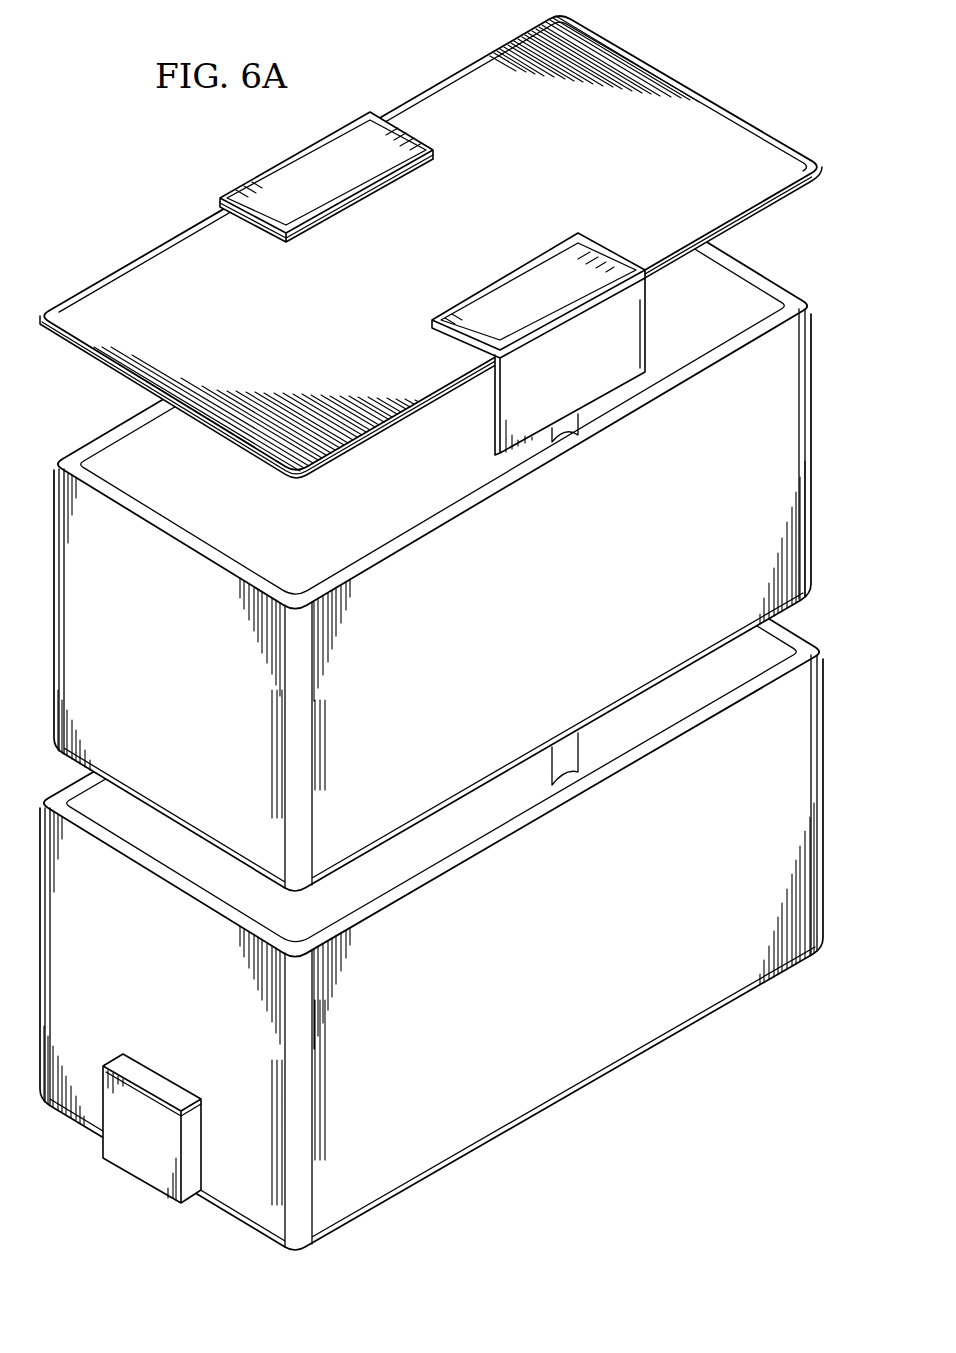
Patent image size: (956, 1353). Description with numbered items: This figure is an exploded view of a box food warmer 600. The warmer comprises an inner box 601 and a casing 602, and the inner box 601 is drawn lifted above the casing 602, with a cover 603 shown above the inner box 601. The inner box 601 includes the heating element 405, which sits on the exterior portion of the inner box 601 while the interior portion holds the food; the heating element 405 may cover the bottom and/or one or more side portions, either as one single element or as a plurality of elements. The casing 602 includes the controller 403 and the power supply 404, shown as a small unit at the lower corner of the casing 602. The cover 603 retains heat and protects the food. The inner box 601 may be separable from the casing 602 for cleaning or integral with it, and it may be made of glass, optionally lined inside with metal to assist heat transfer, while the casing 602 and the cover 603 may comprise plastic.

The box food warmer 600 is at (463, 633).
The inner box 601 is at (811, 466).
The casing 602 is at (825, 813).
The cover 603 is at (152, 257).
The heating element 405 is at (761, 308).
The controller 403 is at (118, 1132).
The power supply 404 is at (147, 1173).